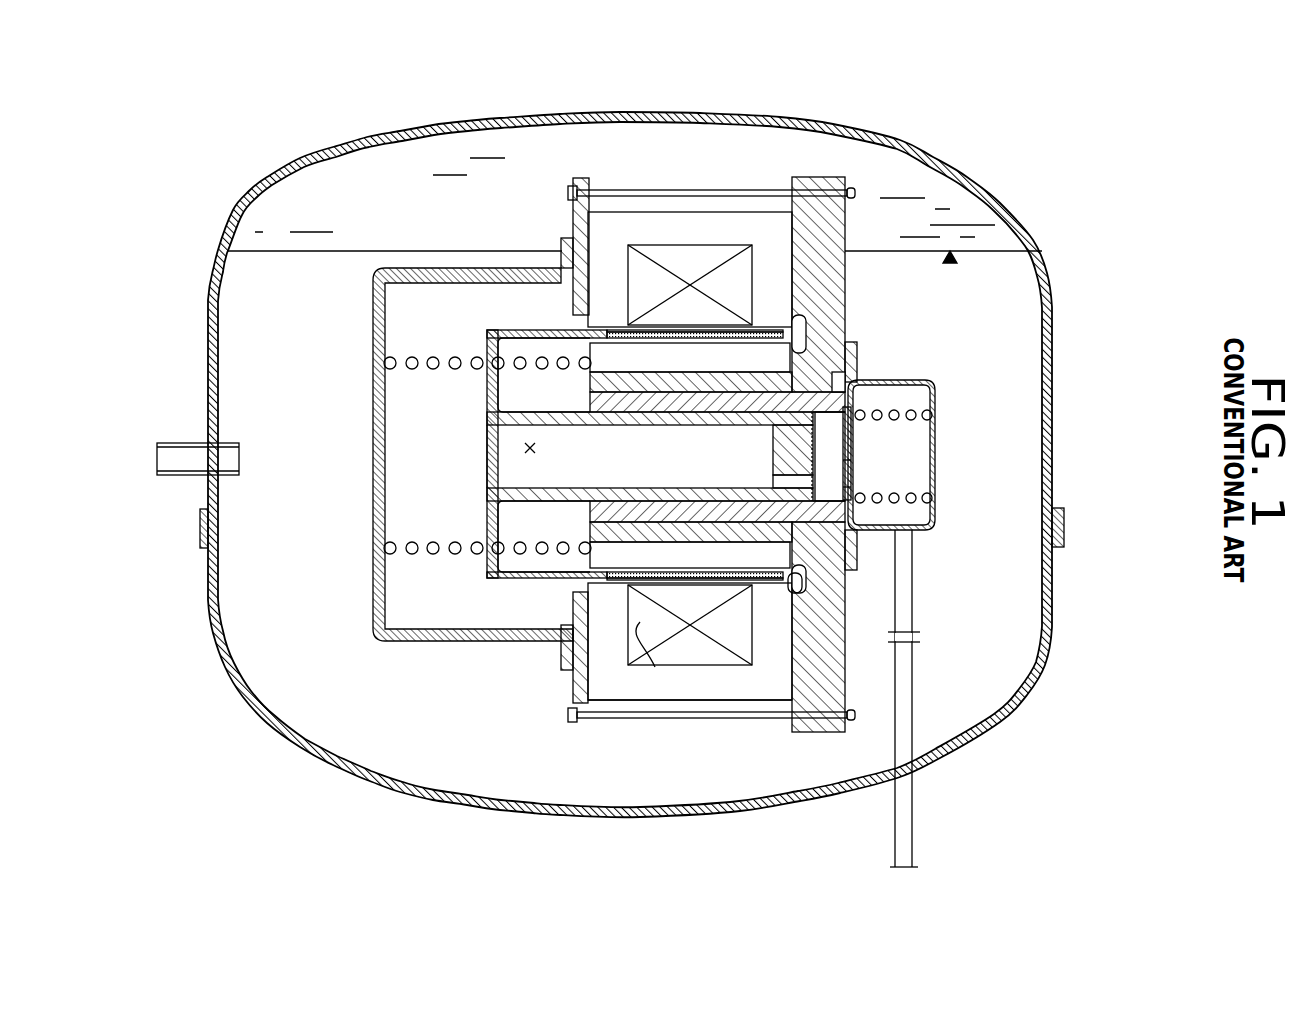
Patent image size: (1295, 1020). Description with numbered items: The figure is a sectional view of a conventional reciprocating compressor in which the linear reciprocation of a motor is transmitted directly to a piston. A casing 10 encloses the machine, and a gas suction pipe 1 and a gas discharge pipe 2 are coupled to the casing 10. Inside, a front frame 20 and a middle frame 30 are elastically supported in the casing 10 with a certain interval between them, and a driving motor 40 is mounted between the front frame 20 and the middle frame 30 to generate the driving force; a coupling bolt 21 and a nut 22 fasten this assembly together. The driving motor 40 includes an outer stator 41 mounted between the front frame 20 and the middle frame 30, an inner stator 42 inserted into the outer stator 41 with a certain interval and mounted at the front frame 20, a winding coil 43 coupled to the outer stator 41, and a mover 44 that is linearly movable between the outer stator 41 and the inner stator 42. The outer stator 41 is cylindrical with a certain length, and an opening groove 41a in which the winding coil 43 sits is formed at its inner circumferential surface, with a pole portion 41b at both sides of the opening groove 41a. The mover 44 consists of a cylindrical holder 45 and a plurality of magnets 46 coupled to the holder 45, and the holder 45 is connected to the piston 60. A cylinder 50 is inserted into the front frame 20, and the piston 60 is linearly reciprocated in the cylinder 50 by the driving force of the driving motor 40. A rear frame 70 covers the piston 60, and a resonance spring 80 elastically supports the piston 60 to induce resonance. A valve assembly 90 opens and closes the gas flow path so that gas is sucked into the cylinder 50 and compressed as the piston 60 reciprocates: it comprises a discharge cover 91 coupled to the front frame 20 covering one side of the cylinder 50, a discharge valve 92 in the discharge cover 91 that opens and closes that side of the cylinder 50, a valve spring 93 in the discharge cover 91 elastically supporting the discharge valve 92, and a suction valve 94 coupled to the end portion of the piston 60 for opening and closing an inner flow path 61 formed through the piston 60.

The gas suction pipe 1 is at (165, 478).
The gas discharge pipe 2 is at (905, 840).
The casing 10 is at (250, 714).
The front frame 20 is at (850, 226).
The coupling bolt 21 is at (572, 177).
The nut 22 is at (849, 186).
The middle frame 30 is at (598, 165).
The driving motor 40 is at (672, 868).
The outer stator 41 is at (760, 705).
The opening groove 41a is at (655, 580).
The pole portion 41b is at (803, 590).
The inner stator 42 is at (715, 580).
The winding coil 43 is at (682, 675).
The mover 44 is at (781, 590).
The holder 45 is at (534, 580).
The magnets 46 is at (655, 667).
The cylinder 50 is at (819, 380).
The piston 60 is at (753, 404).
The inner flow path 61 is at (526, 446).
The rear frame 70 is at (428, 258).
The resonance spring 80 is at (437, 358).
The valve assembly 90 is at (951, 384).
The discharge cover 91 is at (934, 464).
The discharge valve 92 is at (853, 463).
The valve spring 93 is at (915, 417).
The suction valve 94 is at (853, 486).